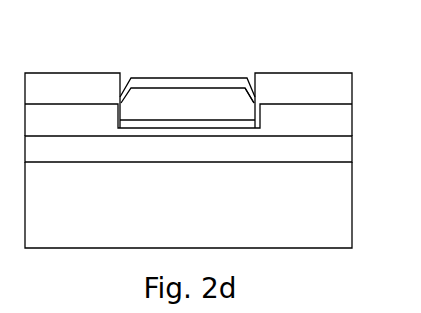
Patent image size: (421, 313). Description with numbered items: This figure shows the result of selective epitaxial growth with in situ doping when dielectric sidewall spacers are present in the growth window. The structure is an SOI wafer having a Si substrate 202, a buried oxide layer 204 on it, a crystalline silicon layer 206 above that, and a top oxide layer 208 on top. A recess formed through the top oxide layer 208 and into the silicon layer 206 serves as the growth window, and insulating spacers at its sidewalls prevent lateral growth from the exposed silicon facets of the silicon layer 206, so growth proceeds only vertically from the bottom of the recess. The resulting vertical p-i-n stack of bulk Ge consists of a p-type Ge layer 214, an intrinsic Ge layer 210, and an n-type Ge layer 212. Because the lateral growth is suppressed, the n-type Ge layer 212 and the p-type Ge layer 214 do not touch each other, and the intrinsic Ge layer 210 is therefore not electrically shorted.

The Si substrate 202 is at (210, 218).
The buried oxide layer 204 is at (45, 159).
The silicon layer 206 is at (288, 130).
The top oxide layer 208 is at (45, 100).
The intrinsic Ge layer 210 is at (165, 116).
The n-type Ge layer 212 is at (142, 79).
The p-type Ge layer 214 is at (225, 123).